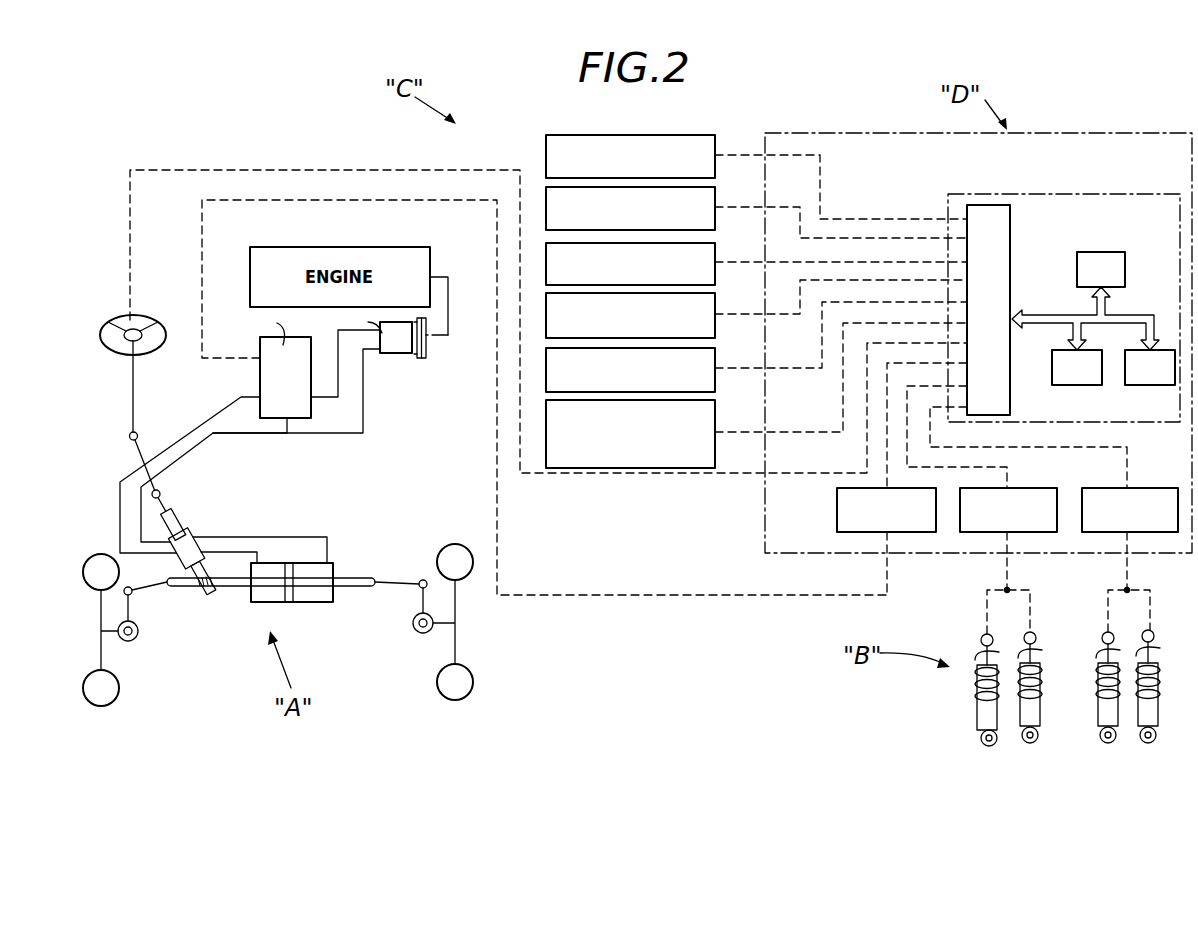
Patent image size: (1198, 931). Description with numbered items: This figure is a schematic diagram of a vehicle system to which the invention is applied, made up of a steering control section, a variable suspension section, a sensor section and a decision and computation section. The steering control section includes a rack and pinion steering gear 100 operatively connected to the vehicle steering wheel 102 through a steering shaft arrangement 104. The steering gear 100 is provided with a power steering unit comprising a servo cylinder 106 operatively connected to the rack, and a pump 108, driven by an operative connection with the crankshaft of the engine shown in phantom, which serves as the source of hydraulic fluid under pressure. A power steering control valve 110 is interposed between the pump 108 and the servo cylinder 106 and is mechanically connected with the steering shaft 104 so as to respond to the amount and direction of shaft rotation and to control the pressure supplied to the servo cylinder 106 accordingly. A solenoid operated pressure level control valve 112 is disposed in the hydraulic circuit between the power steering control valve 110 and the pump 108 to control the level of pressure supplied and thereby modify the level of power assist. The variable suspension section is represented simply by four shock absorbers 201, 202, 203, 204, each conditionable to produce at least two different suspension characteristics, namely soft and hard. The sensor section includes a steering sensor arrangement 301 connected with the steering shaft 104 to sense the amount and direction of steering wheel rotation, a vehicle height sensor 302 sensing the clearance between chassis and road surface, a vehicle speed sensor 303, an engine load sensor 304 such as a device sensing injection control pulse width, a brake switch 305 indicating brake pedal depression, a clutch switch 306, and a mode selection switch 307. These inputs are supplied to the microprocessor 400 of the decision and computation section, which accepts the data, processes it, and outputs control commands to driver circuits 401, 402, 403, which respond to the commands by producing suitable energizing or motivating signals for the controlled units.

The rack and pinion steering gear 100 is at (200, 606).
The vehicle steering wheel 102 is at (158, 352).
The steering shaft arrangement 104 is at (142, 409).
The servo cylinder 106 is at (313, 602).
The pump 108 is at (392, 355).
The power steering control valve 110 is at (188, 536).
The solenoid operated pressure level control valve 112 is at (260, 385).
The shock absorber 201 is at (978, 727).
The shock absorber 202 is at (1025, 722).
The shock absorber 203 is at (1100, 725).
The shock absorber 204 is at (1140, 725).
The steering sensor arrangement 301 is at (138, 330).
The vehicle height sensor 302 is at (546, 156).
The vehicle speed sensor 303 is at (546, 208).
The engine load sensor 304 is at (546, 261).
The brake switch 305 is at (546, 322).
The clutch switch 306 is at (546, 372).
The mode selection switch 307 is at (546, 428).
The microprocessor 400 is at (1003, 194).
The driver circuit 401 is at (837, 503).
The driver circuit 402 is at (1038, 482).
The driver circuit 403 is at (1142, 490).